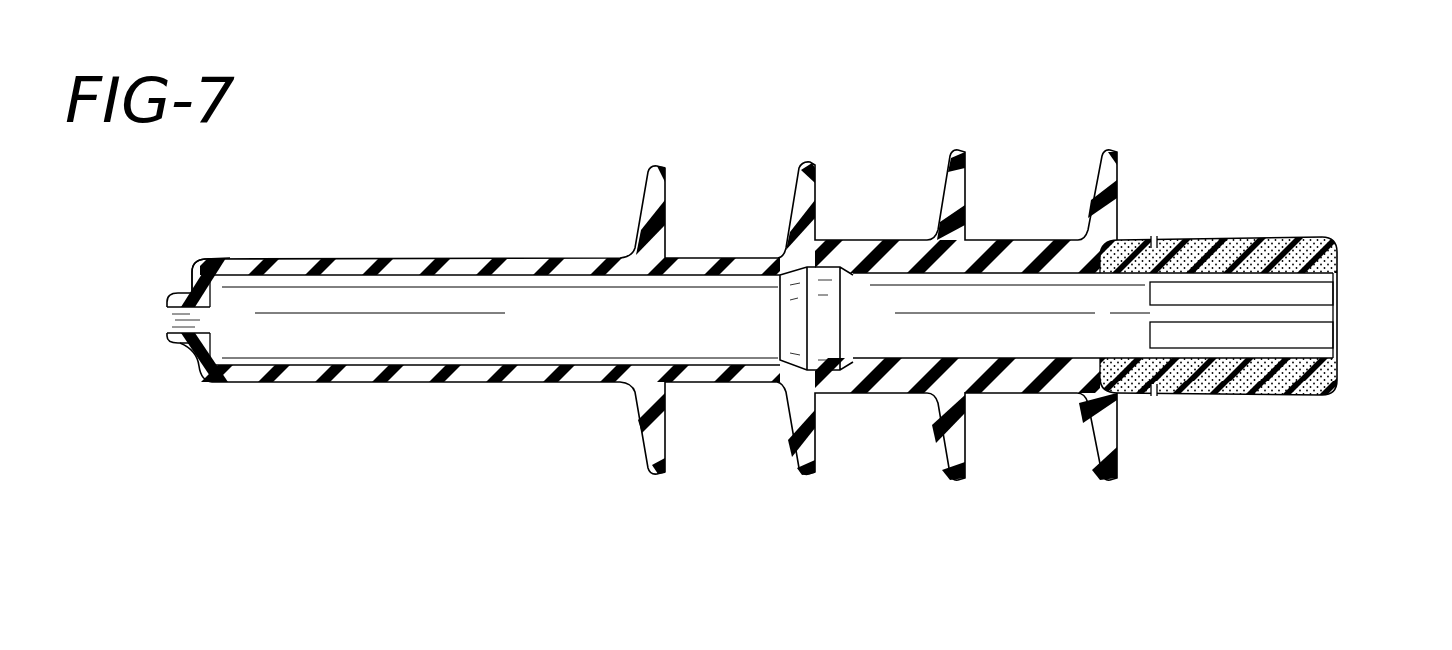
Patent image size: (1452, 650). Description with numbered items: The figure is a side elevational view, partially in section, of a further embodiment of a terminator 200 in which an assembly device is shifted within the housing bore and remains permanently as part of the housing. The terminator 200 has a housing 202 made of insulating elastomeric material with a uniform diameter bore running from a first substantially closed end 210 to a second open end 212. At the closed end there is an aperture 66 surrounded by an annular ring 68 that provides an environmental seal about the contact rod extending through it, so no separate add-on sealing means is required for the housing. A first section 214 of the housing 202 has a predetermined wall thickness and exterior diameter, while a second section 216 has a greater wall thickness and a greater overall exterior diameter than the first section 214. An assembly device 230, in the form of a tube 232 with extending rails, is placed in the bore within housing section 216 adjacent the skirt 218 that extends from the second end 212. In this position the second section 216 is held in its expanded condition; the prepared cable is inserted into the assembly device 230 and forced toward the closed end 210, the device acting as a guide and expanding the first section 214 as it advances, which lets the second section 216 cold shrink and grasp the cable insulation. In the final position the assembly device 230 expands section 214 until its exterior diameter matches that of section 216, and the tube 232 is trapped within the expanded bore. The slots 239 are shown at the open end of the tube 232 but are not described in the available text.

The terminator 200 is at (715, 104).
The housing 202 is at (712, 257).
The first substantially closed end 210 is at (200, 275).
The second open end 212 is at (1118, 240).
The first section 214 is at (330, 275).
The second section 216 is at (1013, 240).
The skirt 218 is at (1258, 232).
The assembly device 230 is at (1068, 335).
The tube 232 is at (900, 297).
The slots 239 is at (1328, 352).
The aperture 66 is at (175, 323).
The annular ring 68 is at (182, 345).